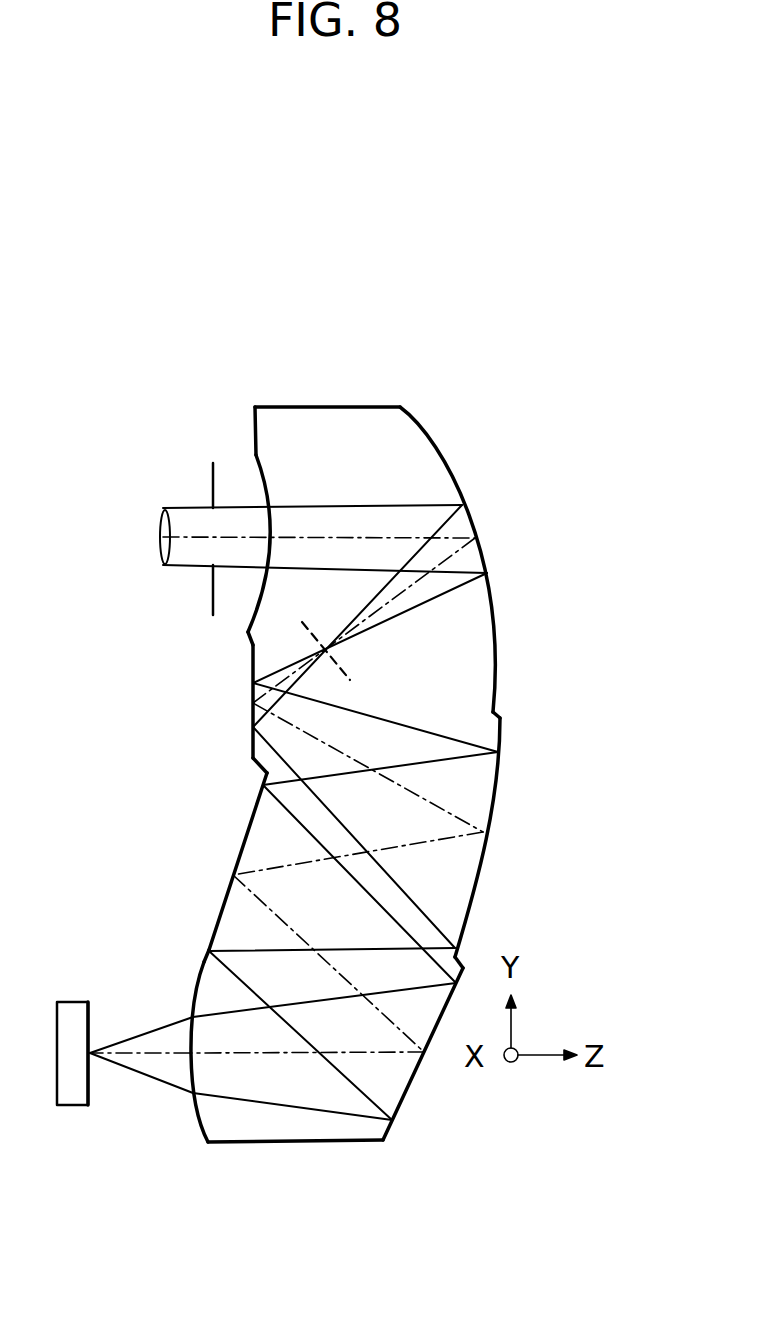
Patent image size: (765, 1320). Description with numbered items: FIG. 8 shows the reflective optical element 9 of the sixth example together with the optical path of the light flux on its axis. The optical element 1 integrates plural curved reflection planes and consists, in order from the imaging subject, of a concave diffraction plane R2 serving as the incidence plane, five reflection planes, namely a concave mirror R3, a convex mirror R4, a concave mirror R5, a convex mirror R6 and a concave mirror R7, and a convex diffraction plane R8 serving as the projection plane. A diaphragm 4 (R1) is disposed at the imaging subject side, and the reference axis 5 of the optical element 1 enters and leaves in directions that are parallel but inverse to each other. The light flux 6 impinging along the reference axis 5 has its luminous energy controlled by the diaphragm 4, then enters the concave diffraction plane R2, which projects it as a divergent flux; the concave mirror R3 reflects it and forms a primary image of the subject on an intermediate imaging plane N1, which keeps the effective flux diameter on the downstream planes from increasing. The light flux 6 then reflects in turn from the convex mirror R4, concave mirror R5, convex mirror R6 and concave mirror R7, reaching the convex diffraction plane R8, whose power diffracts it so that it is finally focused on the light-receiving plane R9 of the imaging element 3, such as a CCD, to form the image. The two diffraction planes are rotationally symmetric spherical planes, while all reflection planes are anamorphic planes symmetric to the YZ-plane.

The reflective optical element 9 is at (340, 298).
The optical element 1 is at (358, 420).
The imaging element 3 is at (73, 1008).
The diaphragm 4 is at (210, 590).
The reference axis 5 is at (197, 535).
The light flux 6 is at (165, 520).
The diaphragm R1 is at (213, 477).
The concave diffraction plane R2 is at (257, 460).
The concave mirror R3 is at (458, 480).
The convex mirror R4 is at (253, 685).
The concave mirror R5 is at (483, 872).
The convex mirror R6 is at (235, 875).
The concave mirror R7 is at (415, 1112).
The convex diffraction plane R8 is at (198, 1123).
The light-receiving plane R9 is at (92, 1092).
The intermediate imaging plane N1 is at (316, 636).